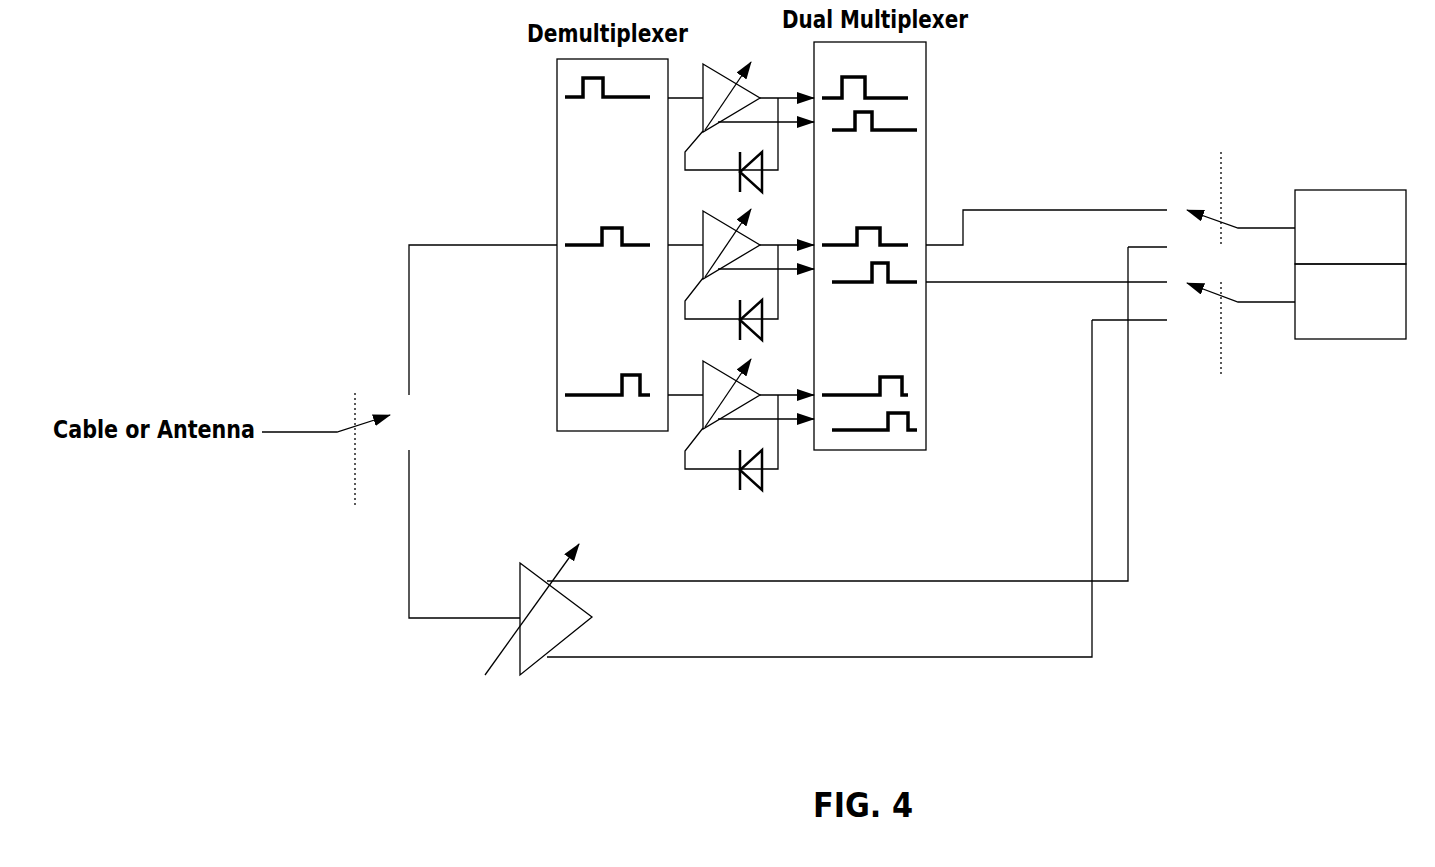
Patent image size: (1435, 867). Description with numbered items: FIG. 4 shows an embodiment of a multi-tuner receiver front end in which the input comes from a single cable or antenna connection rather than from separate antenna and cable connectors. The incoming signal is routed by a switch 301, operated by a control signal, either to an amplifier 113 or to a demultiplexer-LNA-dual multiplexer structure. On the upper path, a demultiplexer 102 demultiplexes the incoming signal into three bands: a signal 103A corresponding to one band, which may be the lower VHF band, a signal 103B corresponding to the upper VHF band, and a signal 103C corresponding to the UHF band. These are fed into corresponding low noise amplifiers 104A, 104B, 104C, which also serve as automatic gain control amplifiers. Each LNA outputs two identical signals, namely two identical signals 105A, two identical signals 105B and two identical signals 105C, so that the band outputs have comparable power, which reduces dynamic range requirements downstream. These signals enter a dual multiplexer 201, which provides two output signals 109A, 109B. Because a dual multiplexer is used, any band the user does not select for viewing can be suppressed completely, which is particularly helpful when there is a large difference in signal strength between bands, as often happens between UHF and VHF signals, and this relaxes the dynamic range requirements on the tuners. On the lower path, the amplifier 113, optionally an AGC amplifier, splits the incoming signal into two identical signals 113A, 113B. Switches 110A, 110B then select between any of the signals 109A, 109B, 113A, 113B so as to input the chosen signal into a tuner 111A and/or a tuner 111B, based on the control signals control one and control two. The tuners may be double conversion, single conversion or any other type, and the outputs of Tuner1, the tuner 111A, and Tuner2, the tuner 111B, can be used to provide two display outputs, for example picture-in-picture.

The demultiplexer 102 is at (558, 76).
The signal 103A is at (630, 102).
The signal 103B is at (628, 248).
The signal 103C is at (593, 394).
The low noise amplifier 104A is at (703, 90).
The low noise amplifier 104B is at (703, 223).
The low noise amplifier 104C is at (703, 377).
The signal 105A is at (788, 90).
The signal 105B is at (785, 243).
The signal 105C is at (785, 388).
The dual multiplexer 201 is at (926, 78).
The signal 109A is at (1095, 210).
The signal 109B is at (1005, 283).
The switch 110A is at (1231, 205).
The switch 110B is at (1206, 302).
The tuner 111A is at (1367, 190).
The tuner 111B is at (1343, 339).
The amplifier 113 is at (525, 567).
The signal 113A is at (885, 581).
The signal 113B is at (880, 657).
The switch 301 is at (350, 391).